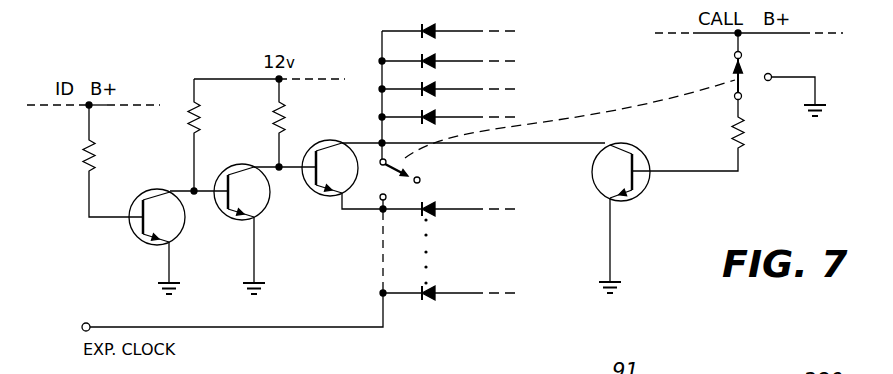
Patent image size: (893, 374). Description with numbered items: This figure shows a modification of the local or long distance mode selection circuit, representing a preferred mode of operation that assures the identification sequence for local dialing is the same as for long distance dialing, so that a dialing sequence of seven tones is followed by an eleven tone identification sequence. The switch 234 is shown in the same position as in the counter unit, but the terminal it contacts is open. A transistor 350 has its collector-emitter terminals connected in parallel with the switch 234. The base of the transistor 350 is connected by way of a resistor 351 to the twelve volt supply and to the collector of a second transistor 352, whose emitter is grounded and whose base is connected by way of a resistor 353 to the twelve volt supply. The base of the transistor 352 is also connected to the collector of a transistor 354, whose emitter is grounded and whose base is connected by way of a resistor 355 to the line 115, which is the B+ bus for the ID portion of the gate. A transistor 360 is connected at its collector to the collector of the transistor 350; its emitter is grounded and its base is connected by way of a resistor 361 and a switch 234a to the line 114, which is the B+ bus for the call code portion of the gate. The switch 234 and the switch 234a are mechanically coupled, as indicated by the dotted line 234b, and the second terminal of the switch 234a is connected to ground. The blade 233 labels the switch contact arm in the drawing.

The line 115 is at (100, 107).
The resistor 355 is at (97, 158).
The transistor 354 is at (179, 224).
The resistor 353 is at (202, 115).
The second transistor 352 is at (263, 208).
The resistor 351 is at (287, 118).
The transistor 350 is at (303, 180).
The switch 233 is at (379, 158).
The switch 234 is at (408, 173).
The dotted line 234b is at (567, 122).
The switch 234a is at (741, 86).
The line 114 is at (768, 36).
The transistor 360 is at (638, 153).
The resistor 361 is at (744, 146).